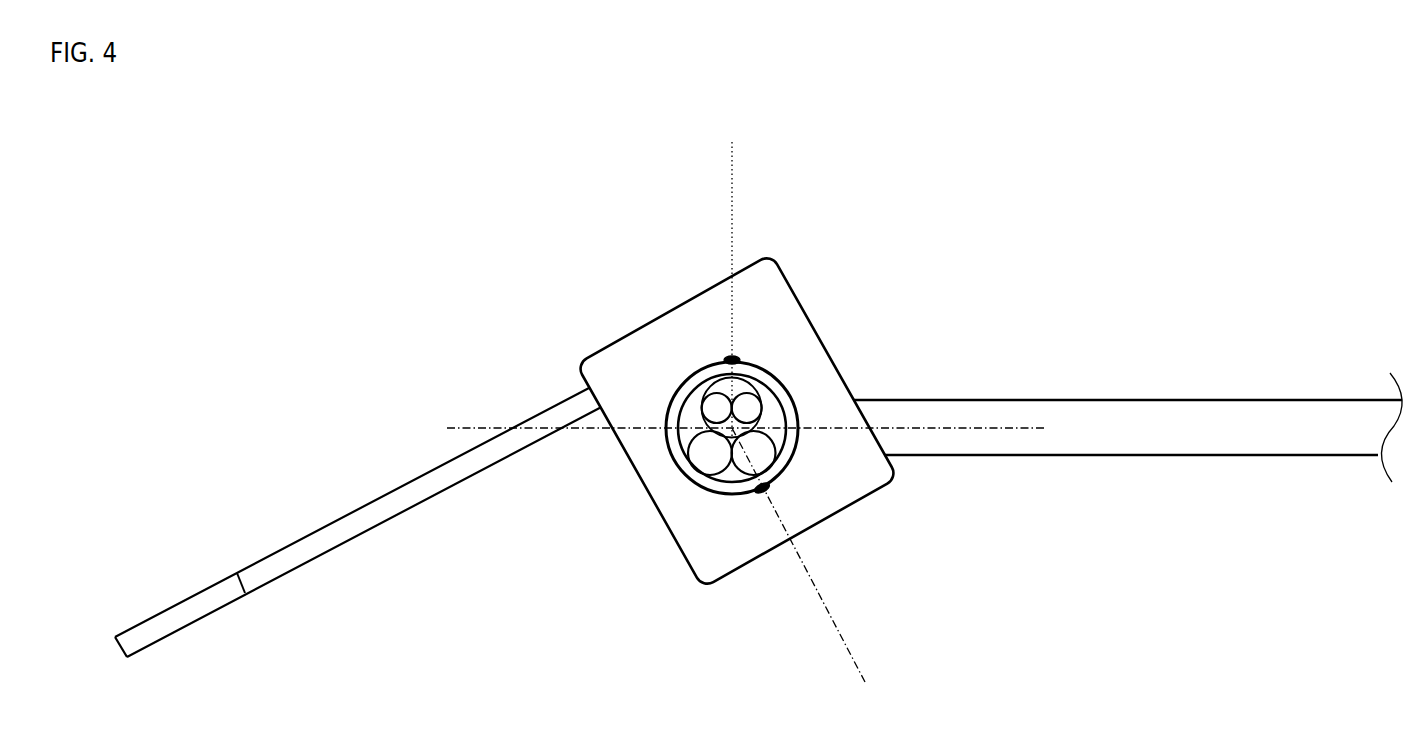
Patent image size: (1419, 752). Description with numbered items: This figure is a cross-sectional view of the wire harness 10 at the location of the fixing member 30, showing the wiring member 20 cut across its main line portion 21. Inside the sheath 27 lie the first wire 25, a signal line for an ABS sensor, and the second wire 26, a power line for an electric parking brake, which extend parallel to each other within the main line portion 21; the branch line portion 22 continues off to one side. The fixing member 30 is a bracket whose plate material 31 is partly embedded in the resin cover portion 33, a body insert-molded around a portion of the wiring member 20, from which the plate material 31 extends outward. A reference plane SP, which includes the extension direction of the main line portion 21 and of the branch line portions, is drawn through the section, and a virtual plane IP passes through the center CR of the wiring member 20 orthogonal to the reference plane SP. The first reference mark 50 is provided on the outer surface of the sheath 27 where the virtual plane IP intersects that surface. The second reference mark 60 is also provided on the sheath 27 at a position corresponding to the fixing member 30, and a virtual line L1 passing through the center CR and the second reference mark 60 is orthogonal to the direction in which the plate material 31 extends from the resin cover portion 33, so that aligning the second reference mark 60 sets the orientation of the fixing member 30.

The wire harness 10 is at (1019, 137).
The wiring member 20 is at (656, 473).
The main line portion 21 is at (806, 468).
The branch line portion 22 is at (1133, 408).
The first wire 25 is at (722, 374).
The second wire 26 is at (748, 462).
The sheath 27 is at (782, 388).
The fixing member 30 is at (418, 513).
The plate material 31 is at (407, 484).
The resin cover portion 33 is at (878, 488).
The first reference mark 50 is at (740, 358).
The second reference mark 60 is at (766, 492).
The center of the wiring member CR is at (728, 427).
The virtual plane IP is at (735, 187).
The virtual line L1 is at (853, 664).
The reference plane SP is at (975, 427).